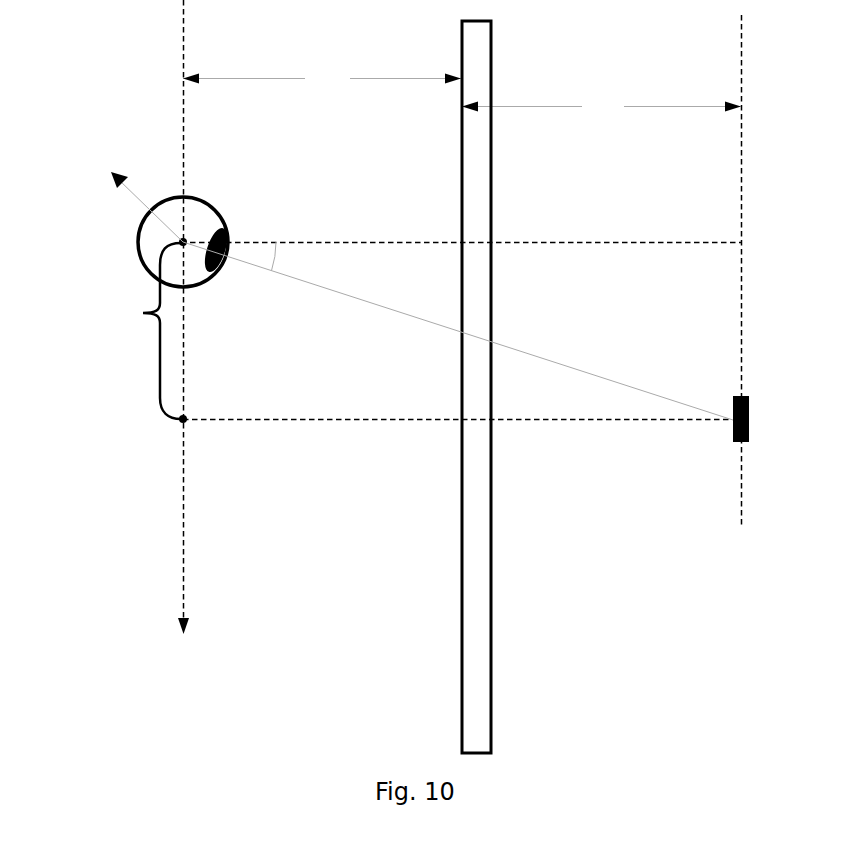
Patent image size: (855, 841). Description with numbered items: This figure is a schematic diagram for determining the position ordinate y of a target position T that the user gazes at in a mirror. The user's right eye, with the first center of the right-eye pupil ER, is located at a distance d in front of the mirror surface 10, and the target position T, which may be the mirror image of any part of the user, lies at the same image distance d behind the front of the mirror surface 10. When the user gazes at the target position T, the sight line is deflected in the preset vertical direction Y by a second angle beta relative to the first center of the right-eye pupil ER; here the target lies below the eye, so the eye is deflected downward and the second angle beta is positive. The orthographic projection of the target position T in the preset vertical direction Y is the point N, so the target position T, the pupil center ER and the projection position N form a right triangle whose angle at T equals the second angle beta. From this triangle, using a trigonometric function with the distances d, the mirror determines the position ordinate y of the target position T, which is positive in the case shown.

The mirror surface 10 is at (460, 612).
The target position T is at (757, 431).
The orthographic projection position N is at (203, 443).
The preset vertical direction Y is at (180, 344).
The position ordinate y is at (146, 331).
The distance d is at (462, 90).
The second angle beta is at (458, 330).
The first center of the right-eye pupil ER is at (136, 207).